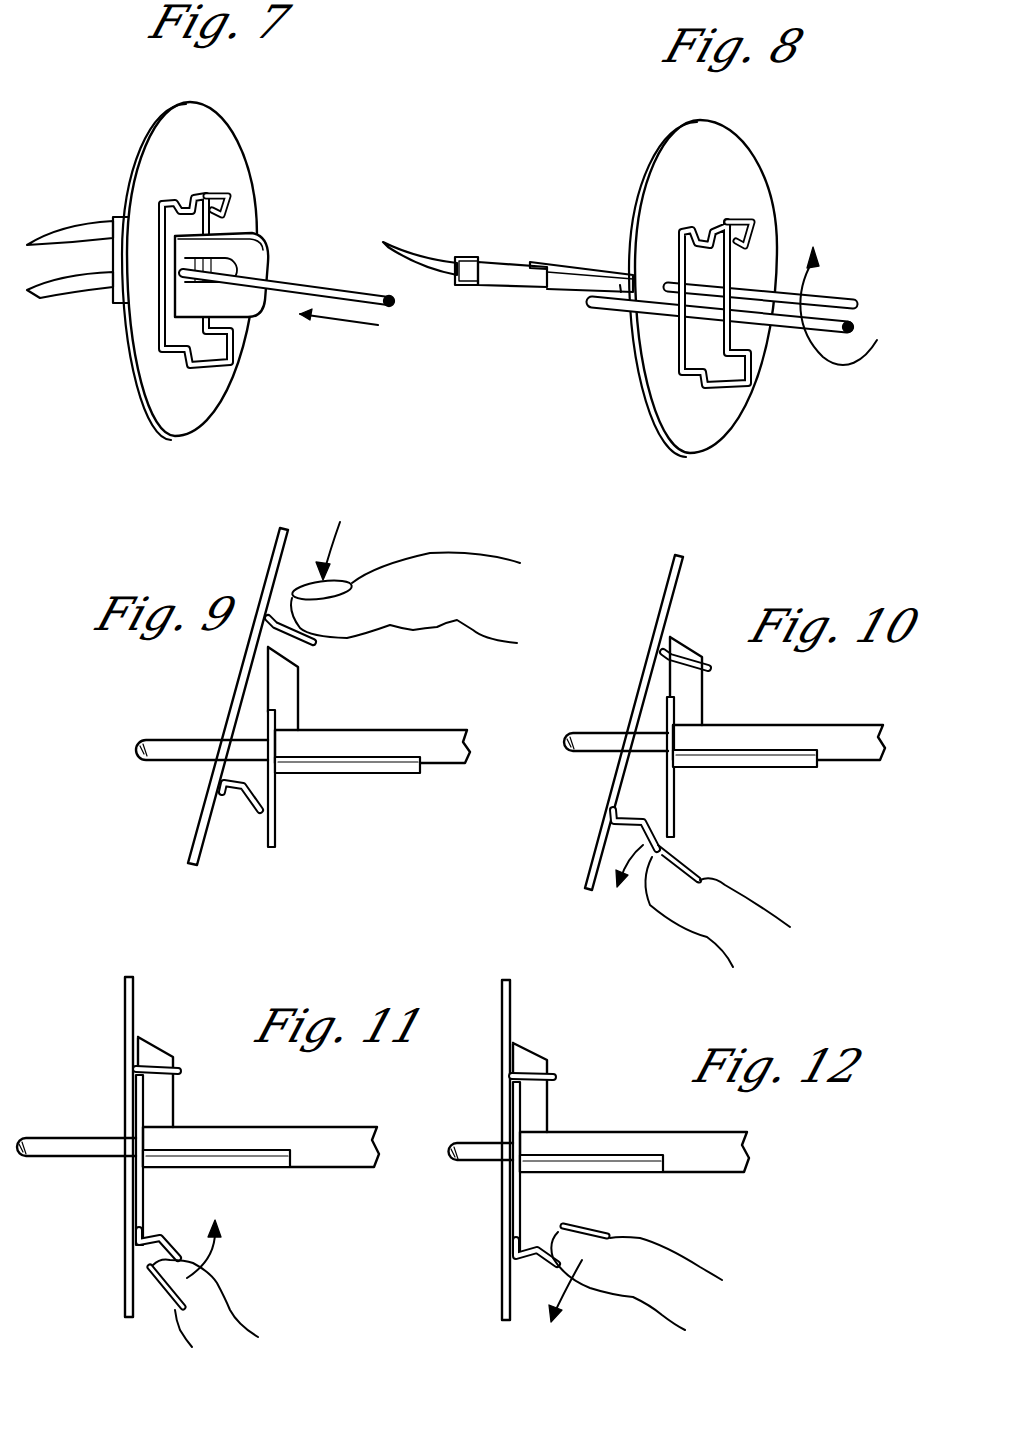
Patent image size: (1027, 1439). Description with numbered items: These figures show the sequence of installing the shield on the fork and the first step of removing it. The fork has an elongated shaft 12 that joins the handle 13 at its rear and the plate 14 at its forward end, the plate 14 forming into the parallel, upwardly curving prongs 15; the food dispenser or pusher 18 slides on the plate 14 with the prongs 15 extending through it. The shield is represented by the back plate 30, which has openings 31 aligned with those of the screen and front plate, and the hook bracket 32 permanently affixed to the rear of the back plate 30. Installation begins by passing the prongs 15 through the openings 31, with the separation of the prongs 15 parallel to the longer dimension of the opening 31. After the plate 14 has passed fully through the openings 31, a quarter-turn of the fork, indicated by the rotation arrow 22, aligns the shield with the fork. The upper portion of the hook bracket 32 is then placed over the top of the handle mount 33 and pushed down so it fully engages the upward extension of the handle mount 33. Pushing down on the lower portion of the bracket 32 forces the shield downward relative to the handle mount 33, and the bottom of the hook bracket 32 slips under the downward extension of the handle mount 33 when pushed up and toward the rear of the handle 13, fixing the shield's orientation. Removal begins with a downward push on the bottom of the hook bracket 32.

In FIG. 7, the shaft 12 is at (303, 273).
In FIG. 8, the shaft 12 is at (790, 330).
In FIG. 9, the shaft 12 is at (175, 747).
In FIG. 10, the shaft 12 is at (583, 733).
In FIG. 11, the shaft 12 is at (48, 1142).
In FIG. 12, the shaft 12 is at (477, 1147).
In FIG. 9, the handle 13 is at (387, 740).
In FIG. 10, the handle 13 is at (847, 732).
In FIG. 11, the handle 13 is at (310, 1143).
In FIG. 12, the handle 13 is at (663, 1143).
In FIG. 8, the plate 14 is at (573, 283).
In FIG. 7, the prongs 15 is at (67, 233).
In FIG. 8, the prongs 15 is at (418, 255).
In FIG. 8, the food dispenser or pusher 18 is at (498, 277).
In FIG. 8, the rotation arrow 22 is at (830, 297).
In FIG. 7, the back plate 30 is at (196, 151).
In FIG. 8, the back plate 30 is at (657, 170).
In FIG. 9, the back plate 30 is at (275, 545).
In FIG. 10, the back plate 30 is at (672, 572).
In FIG. 11, the back plate 30 is at (135, 1005).
In FIG. 12, the back plate 30 is at (513, 1018).
In FIG. 7, the openings 31 is at (190, 190).
In FIG. 8, the openings 31 is at (702, 232).
In FIG. 7, the hook bracket 32 is at (213, 367).
In FIG. 9, the hook bracket 32 is at (235, 800).
In FIG. 10, the hook bracket 32 is at (615, 823).
In FIG. 11, the hook bracket 32 is at (167, 1238).
In FIG. 12, the hook bracket 32 is at (533, 1243).
In FIG. 9, the handle mount 33 is at (293, 683).
In FIG. 10, the handle mount 33 is at (697, 692).
In FIG. 11, the handle mount 33 is at (163, 1107).
In FIG. 12, the handle mount 33 is at (540, 1103).